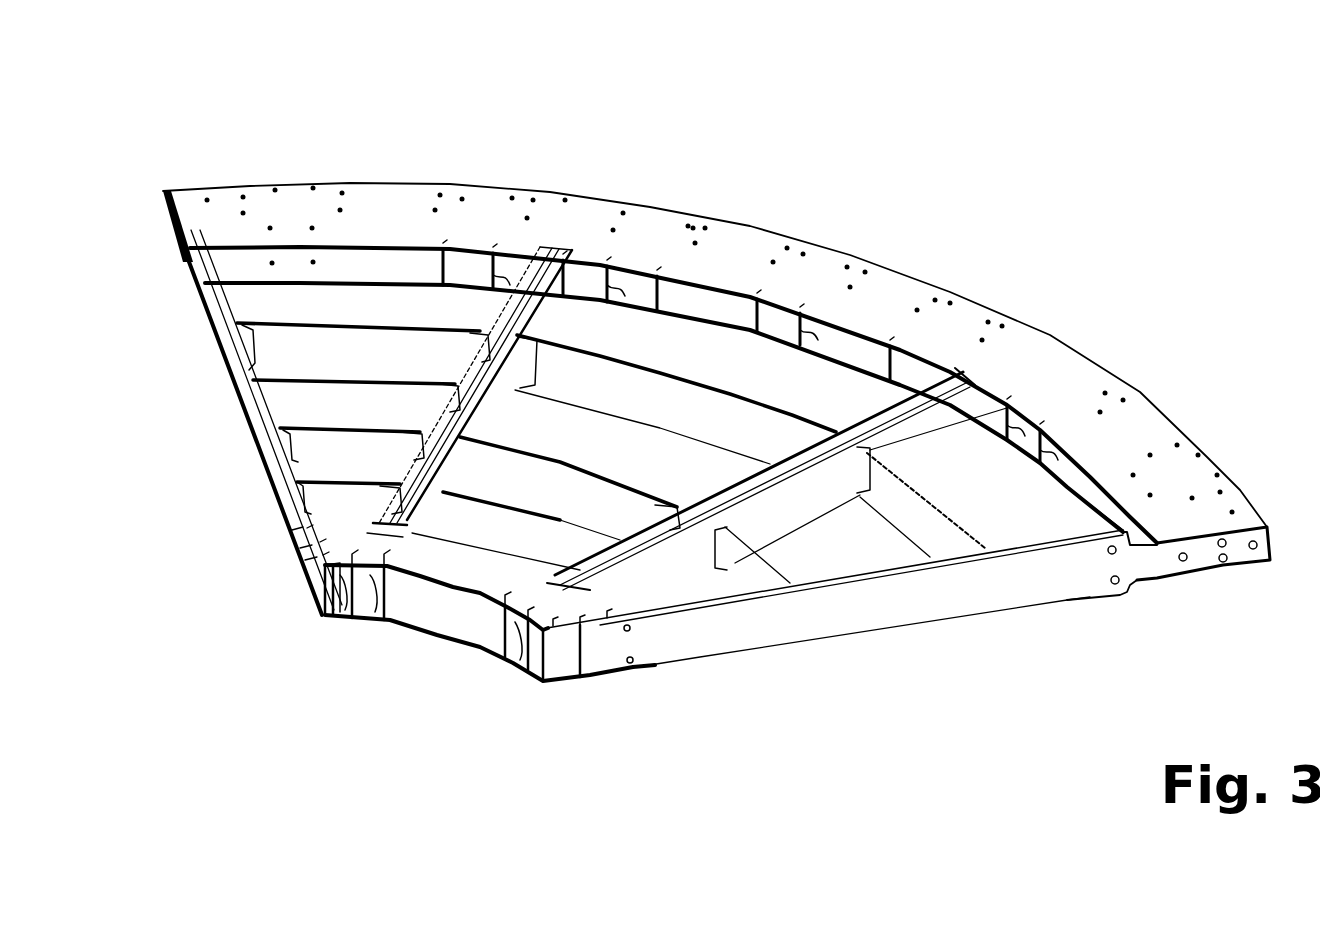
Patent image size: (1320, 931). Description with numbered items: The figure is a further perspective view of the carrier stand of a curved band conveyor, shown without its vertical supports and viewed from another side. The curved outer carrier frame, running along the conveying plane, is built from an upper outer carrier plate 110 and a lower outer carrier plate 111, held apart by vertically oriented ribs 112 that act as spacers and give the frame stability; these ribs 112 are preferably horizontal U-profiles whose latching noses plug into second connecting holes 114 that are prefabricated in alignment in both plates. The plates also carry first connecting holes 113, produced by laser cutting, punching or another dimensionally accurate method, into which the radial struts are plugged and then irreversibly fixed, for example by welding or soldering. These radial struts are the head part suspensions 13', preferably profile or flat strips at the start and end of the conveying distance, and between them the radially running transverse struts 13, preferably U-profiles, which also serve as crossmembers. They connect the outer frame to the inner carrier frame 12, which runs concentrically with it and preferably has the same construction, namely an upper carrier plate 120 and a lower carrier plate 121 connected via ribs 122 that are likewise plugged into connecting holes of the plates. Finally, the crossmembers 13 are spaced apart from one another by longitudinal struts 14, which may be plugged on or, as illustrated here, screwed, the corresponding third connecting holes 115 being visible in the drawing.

The inner carrier frame 12 is at (400, 712).
The upper outer carrier plate 110 is at (1143, 417).
The lower outer carrier plate 111 is at (1093, 492).
The ribs 112 is at (440, 267).
The first connecting holes 113 is at (597, 210).
The second connecting holes 114 is at (462, 198).
The third connecting holes 115 is at (243, 195).
The upper carrier plate of the inner carrier frame 120 is at (570, 607).
The lower carrier plate of the inner carrier frame 121 is at (443, 615).
The ribs of the inner carrier frame 122 is at (383, 588).
The transverse struts 13 is at (540, 491).
The head part suspensions 13' is at (607, 486).
The longitudinal struts 14 is at (933, 532).